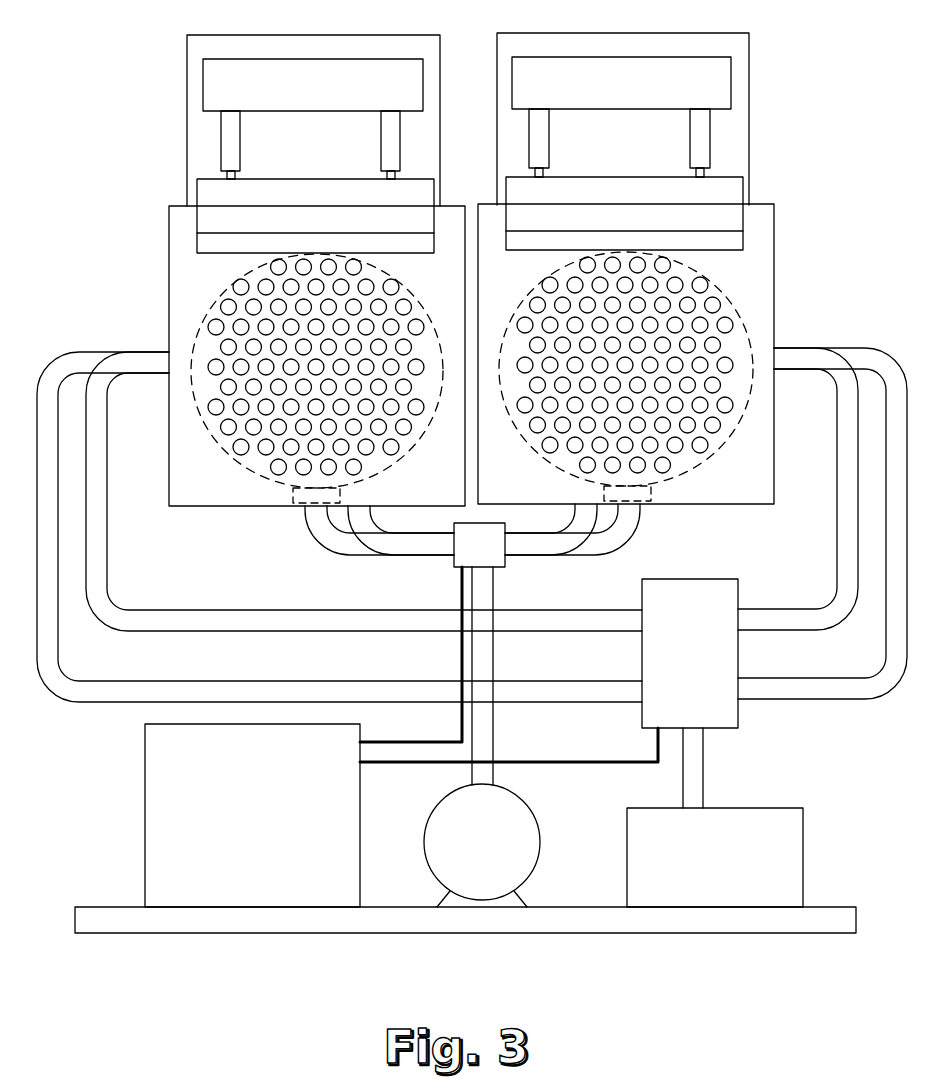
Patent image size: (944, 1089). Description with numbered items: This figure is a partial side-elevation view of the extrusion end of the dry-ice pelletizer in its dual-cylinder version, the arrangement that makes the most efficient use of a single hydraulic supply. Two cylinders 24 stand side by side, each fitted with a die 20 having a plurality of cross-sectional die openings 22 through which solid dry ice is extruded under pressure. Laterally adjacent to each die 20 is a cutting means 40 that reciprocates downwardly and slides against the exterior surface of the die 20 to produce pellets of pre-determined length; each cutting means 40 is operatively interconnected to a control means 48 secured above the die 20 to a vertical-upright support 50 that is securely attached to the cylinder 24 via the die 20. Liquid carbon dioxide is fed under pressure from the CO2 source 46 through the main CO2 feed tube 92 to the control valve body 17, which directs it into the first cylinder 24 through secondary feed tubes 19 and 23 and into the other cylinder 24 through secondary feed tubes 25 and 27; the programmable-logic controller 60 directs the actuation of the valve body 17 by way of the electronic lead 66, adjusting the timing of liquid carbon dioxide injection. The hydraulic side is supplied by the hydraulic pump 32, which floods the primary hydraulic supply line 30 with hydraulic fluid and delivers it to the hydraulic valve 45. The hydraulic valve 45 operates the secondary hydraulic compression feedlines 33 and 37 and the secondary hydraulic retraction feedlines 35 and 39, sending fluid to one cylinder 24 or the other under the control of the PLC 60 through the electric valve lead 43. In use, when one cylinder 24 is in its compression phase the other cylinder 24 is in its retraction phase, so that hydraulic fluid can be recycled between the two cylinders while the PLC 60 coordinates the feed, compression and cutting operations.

The control valve body 17 is at (677, 666).
The secondary feed tube 19 is at (255, 608).
The die 20 is at (167, 407).
The die openings 22 is at (367, 455).
The secondary feed tube 23 is at (583, 678).
The cylinder 24 is at (240, 463).
The secondary feed tube 25 is at (770, 606).
The secondary feed tube 27 is at (770, 675).
The primary hydraulic supply line 30 is at (494, 770).
The hydraulic pump 32 is at (469, 856).
The secondary hydraulic compression feedline 33 is at (345, 557).
The secondary hydraulic retraction feedline 35 is at (428, 557).
The secondary hydraulic compression feedline 37 is at (630, 540).
The secondary hydraulic retraction feedline 39 is at (530, 550).
The cutting means 40 is at (302, 216).
The electric valve lead 43 is at (435, 740).
The hydraulic valve 45 is at (467, 556).
The CO2 source 46 is at (700, 871).
The control means 48 is at (300, 101).
The vertical-upright support 50 is at (185, 82).
The programmable-logic controller 60 is at (233, 847).
The electronic lead 66 is at (583, 757).
The main CO2 feed tube 92 is at (703, 795).